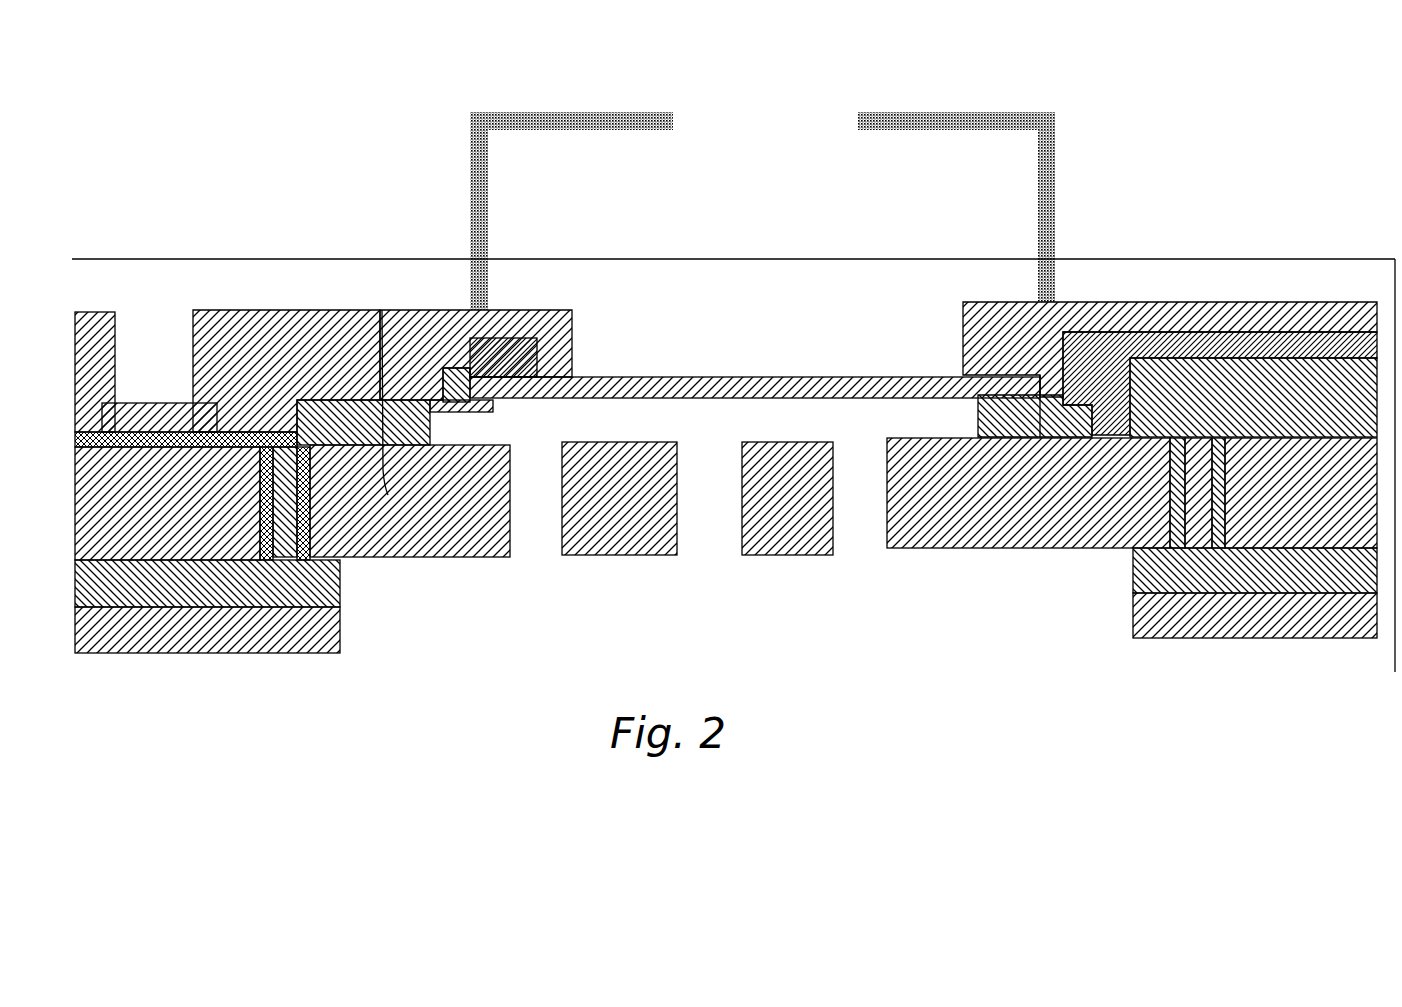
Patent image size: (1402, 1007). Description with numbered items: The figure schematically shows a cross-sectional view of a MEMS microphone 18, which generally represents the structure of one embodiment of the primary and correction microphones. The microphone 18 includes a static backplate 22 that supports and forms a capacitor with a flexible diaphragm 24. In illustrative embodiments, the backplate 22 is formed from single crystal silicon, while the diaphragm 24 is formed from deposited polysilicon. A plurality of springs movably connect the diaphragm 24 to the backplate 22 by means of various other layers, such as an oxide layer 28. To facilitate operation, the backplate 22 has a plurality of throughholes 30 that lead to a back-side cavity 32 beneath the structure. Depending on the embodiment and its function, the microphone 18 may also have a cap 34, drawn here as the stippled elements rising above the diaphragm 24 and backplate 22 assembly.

The MEMS microphone 18 is at (1140, 76).
The static backplate 22 is at (948, 472).
The flexible diaphragm 24 is at (857, 377).
The oxide layer 28 is at (1042, 393).
The throughholes 30 is at (862, 490).
The back-side cavity 32 is at (708, 628).
The cap 34 is at (875, 107).